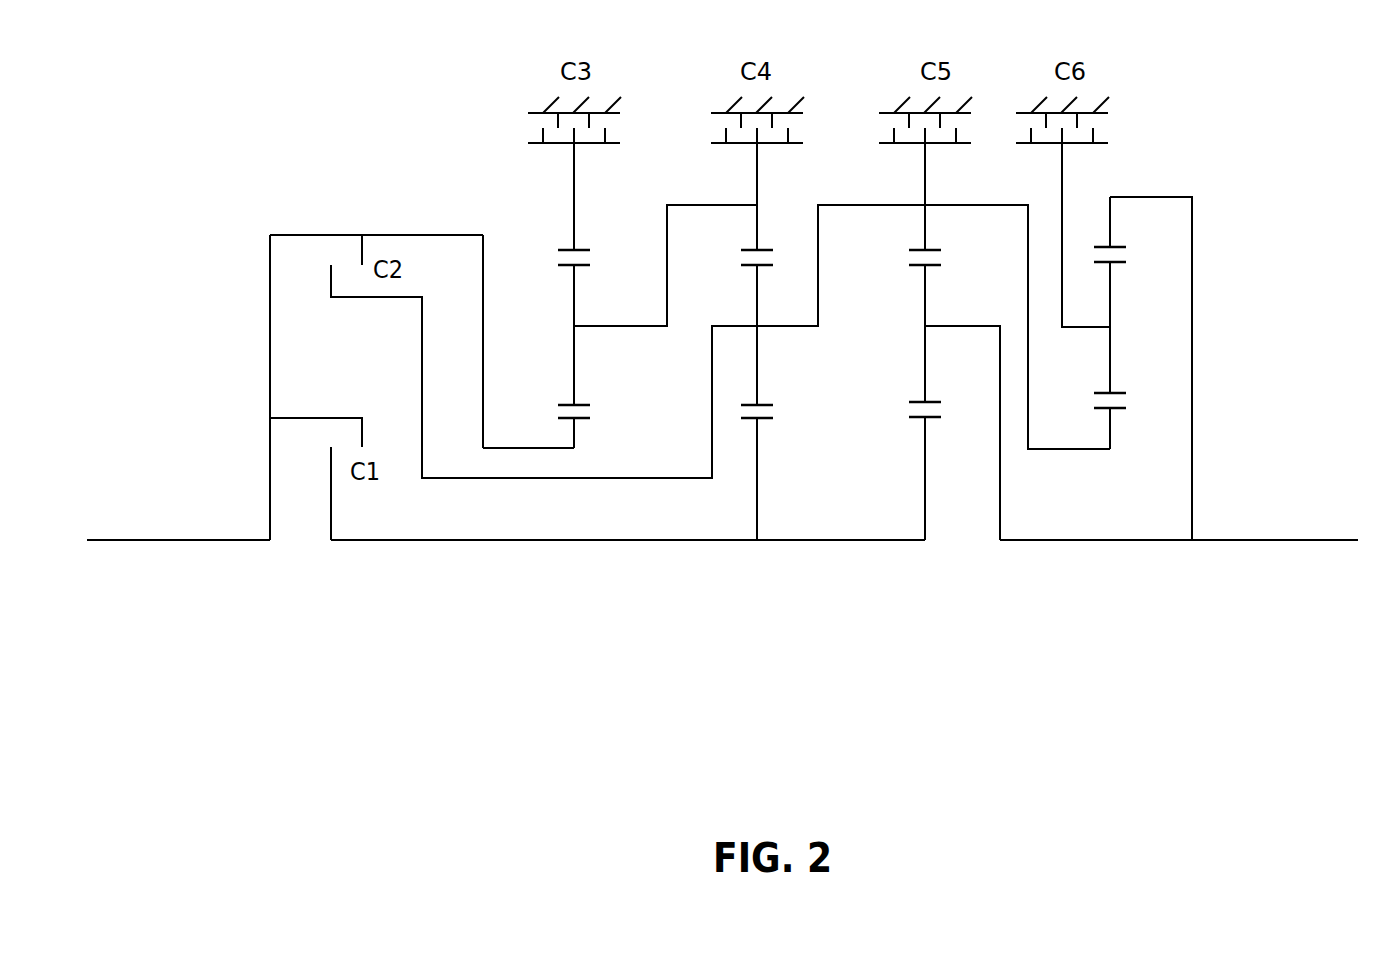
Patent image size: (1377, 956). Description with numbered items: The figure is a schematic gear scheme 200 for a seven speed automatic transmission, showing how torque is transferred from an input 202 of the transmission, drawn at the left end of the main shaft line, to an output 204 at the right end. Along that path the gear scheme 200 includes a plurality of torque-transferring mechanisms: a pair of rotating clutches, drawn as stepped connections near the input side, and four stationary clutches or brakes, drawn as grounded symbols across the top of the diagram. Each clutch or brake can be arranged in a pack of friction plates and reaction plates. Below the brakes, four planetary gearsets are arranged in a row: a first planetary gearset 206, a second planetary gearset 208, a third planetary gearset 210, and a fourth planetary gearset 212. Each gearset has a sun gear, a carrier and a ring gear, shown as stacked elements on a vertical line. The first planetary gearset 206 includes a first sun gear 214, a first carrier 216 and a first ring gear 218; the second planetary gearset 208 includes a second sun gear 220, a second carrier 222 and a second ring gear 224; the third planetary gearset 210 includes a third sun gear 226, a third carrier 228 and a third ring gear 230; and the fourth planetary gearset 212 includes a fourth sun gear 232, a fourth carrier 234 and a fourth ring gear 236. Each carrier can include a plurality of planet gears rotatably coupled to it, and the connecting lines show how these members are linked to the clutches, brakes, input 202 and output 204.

The gear scheme 200 is at (318, 122).
The input 202 is at (163, 547).
The output 204 is at (1290, 547).
The first planetary gearset 206 is at (587, 608).
The second planetary gearset 208 is at (751, 608).
The third planetary gearset 210 is at (927, 608).
The fourth planetary gearset 212 is at (1107, 608).
The P1 sun gear 214 is at (575, 424).
The P1 carrier 216 is at (575, 357).
The P1 ring gear 218 is at (575, 185).
The P2 sun gear 220 is at (758, 463).
The P2 carrier 222 is at (758, 366).
The P2 ring gear 224 is at (758, 169).
The P3 sun gear 226 is at (926, 466).
The P3 carrier 228 is at (926, 298).
The P3 ring gear 230 is at (926, 169).
The P4 sun gear 232 is at (1111, 434).
The P4 carrier 234 is at (1111, 352).
The P4 ring gear 236 is at (1111, 226).